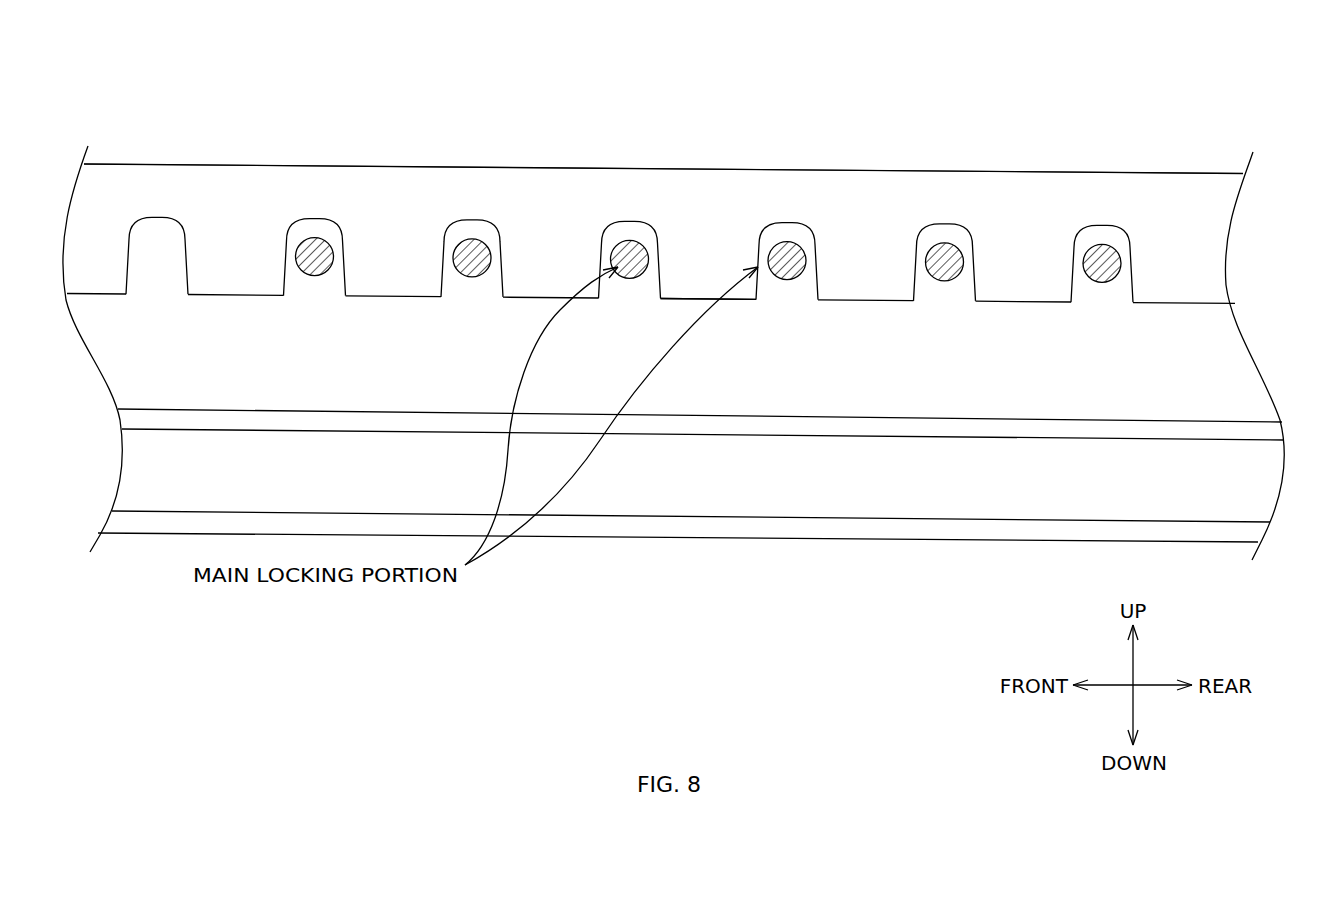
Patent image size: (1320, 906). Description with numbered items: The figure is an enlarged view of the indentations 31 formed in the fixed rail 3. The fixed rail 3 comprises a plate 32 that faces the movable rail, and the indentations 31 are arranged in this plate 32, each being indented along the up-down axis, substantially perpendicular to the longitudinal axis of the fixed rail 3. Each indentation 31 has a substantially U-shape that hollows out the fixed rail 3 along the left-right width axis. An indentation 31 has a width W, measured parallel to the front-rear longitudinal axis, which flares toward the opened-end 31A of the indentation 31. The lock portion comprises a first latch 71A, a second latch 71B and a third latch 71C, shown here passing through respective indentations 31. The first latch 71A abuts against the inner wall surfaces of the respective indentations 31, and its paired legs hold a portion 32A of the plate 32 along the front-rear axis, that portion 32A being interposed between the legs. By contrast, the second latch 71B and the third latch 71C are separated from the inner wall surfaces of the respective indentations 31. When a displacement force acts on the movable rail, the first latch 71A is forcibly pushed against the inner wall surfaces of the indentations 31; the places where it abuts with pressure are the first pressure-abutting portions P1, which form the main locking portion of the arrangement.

The fixed rail 3 is at (1022, 171).
The indentation 31 is at (153, 230).
The opened-end 31A is at (157, 296).
The plate 32 is at (237, 213).
The portion 32A is at (708, 238).
The first latch 71A is at (633, 240).
The second latch 71B is at (316, 238).
The third latch 71C is at (943, 243).
The first pressure-abutting portion P1 is at (654, 246).
The width W is at (130, 272).